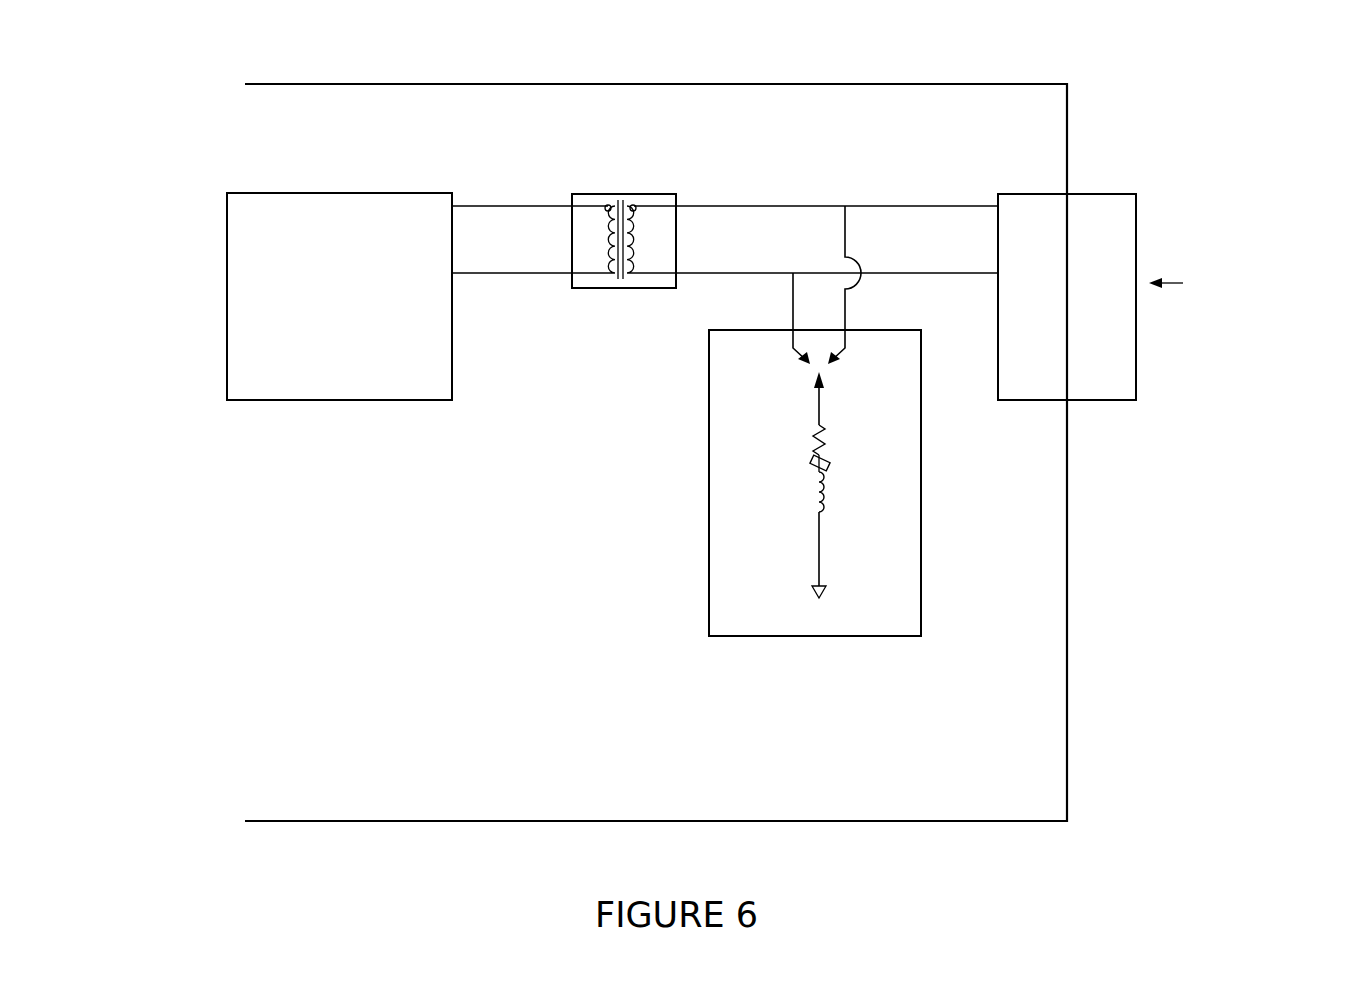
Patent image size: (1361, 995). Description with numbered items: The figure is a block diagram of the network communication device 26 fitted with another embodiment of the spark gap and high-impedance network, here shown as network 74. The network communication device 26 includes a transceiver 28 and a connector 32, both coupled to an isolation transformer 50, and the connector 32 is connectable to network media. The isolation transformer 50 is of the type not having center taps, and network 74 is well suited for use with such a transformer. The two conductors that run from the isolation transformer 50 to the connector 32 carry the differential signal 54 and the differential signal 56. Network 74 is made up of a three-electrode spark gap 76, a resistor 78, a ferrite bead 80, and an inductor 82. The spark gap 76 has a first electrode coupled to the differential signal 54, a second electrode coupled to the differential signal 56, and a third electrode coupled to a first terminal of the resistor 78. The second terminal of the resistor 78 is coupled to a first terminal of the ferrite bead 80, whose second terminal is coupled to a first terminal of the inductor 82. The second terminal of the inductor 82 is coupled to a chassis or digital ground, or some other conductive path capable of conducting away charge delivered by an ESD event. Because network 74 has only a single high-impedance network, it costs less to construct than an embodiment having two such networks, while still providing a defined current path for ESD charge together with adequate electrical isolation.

The network communication device 26 is at (343, 846).
The transceiver 28 is at (375, 401).
The connector 32 is at (1033, 401).
The isolation transformer 50 is at (632, 289).
The differential signal 54 is at (816, 205).
The differential signal 56 is at (817, 272).
The spark gap and high-impedance network 74 is at (778, 637).
The three-electrode spark gap 76 is at (800, 380).
The resistor 78 is at (812, 432).
The ferrite bead 80 is at (831, 466).
The inductor 82 is at (814, 492).